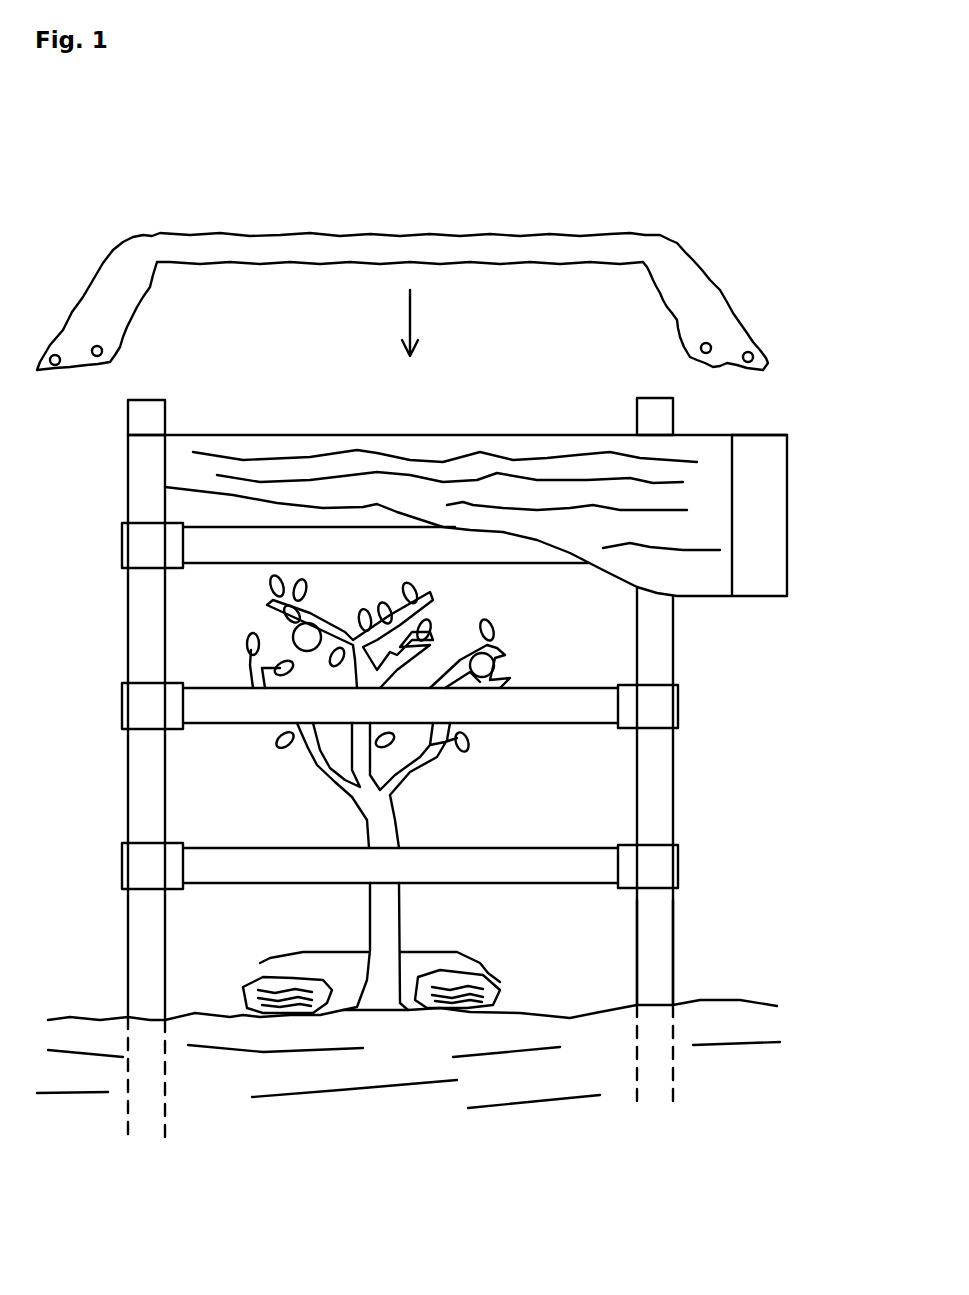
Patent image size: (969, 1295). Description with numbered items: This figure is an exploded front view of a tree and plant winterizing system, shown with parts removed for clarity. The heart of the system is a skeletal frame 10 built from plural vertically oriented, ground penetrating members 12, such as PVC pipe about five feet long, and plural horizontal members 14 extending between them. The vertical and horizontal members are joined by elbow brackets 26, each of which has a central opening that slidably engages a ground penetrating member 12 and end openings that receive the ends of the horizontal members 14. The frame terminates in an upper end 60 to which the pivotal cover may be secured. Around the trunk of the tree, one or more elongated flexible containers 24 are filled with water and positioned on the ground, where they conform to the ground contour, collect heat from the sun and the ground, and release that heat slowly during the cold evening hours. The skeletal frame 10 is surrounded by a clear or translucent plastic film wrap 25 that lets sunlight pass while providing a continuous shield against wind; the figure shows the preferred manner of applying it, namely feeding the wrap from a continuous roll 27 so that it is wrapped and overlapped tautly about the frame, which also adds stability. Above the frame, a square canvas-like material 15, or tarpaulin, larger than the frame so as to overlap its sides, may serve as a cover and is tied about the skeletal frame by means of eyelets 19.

The skeletal frame 10 is at (683, 795).
The ground penetrating member 12 is at (675, 965).
The horizontal member 14 is at (463, 848).
The canvas-like material 15 is at (630, 232).
The eyelet 19 is at (751, 353).
The flexible container 24 is at (455, 952).
The plastic film wrap 25 is at (663, 488).
The elbow bracket 26 is at (688, 690).
The continuous roll 27 is at (787, 492).
The upper end 60 is at (640, 398).